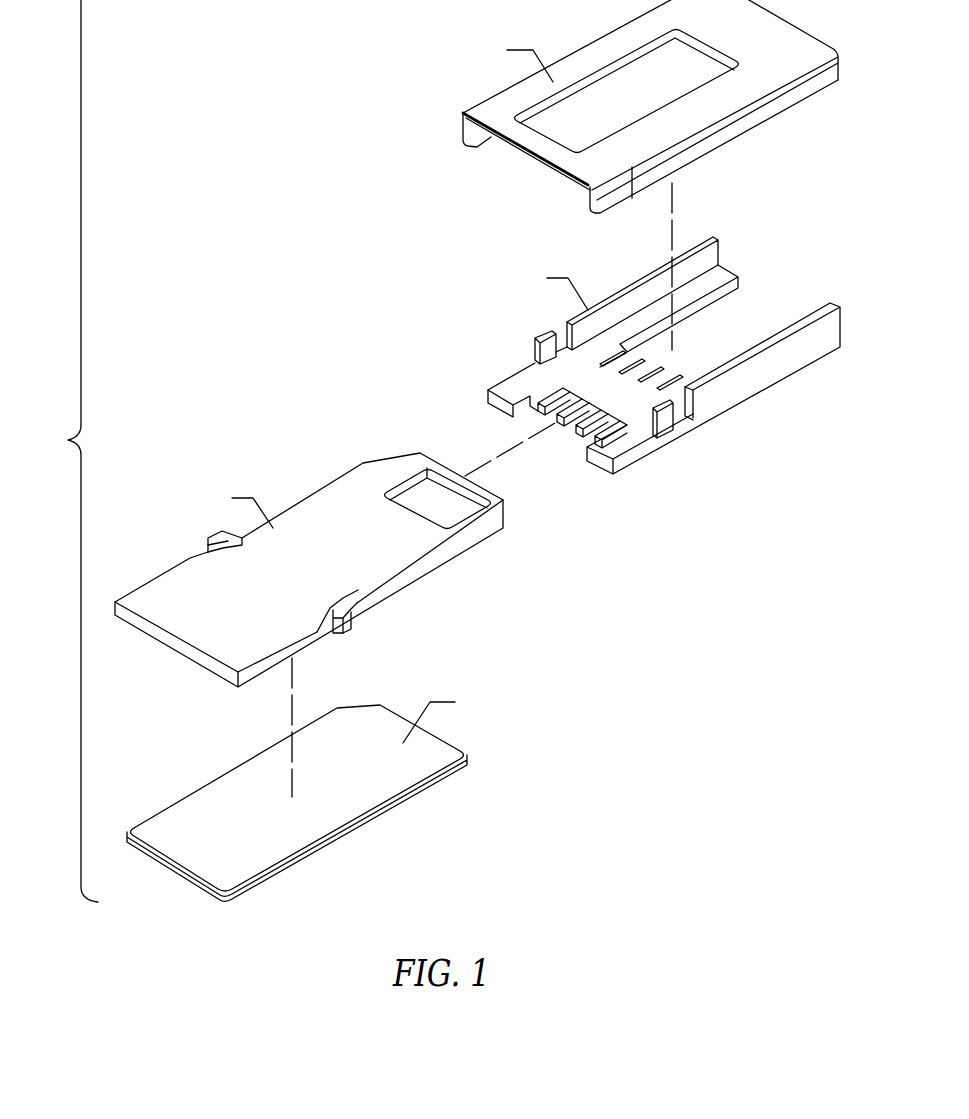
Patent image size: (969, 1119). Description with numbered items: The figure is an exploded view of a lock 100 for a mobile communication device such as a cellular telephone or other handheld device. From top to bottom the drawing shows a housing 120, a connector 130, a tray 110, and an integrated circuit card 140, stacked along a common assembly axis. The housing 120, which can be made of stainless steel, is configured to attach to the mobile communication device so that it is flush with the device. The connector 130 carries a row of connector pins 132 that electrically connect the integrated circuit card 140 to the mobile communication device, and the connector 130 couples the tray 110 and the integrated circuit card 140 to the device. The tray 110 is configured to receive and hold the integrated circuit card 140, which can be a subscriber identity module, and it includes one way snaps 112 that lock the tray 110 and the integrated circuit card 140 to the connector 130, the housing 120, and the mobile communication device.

The lock 100 is at (68, 440).
The tray 110 is at (337, 487).
The one way snaps 112 is at (353, 620).
The housing 120 is at (628, 35).
The connector 130 is at (723, 398).
The connector pins 132 is at (573, 433).
The integrated circuit card 140 is at (243, 777).